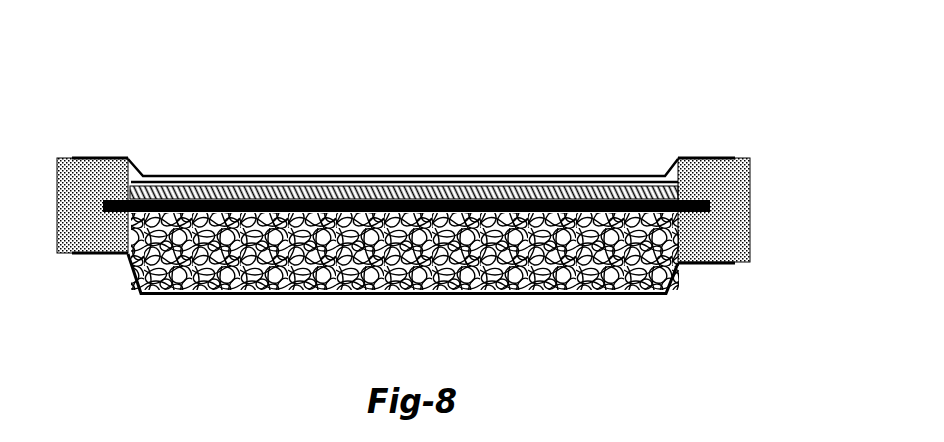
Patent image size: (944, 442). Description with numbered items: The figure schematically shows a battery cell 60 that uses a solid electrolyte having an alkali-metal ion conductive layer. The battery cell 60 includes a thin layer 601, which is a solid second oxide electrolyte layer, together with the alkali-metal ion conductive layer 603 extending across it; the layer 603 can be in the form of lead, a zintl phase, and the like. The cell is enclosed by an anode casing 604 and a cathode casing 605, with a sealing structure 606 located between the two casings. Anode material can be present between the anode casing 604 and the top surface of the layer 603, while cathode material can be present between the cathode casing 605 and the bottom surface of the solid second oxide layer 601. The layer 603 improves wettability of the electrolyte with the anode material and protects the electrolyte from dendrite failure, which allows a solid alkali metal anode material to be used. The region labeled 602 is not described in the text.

The battery cell 60 is at (164, 69).
The thin layer 601 is at (238, 184).
The fibrous filler mesh 602 is at (242, 291).
The alkali-metal ion conductive layer 603 is at (350, 179).
The anode casing 604 is at (452, 175).
The cathode casing 605 is at (455, 295).
The sealing structure 606 is at (708, 180).